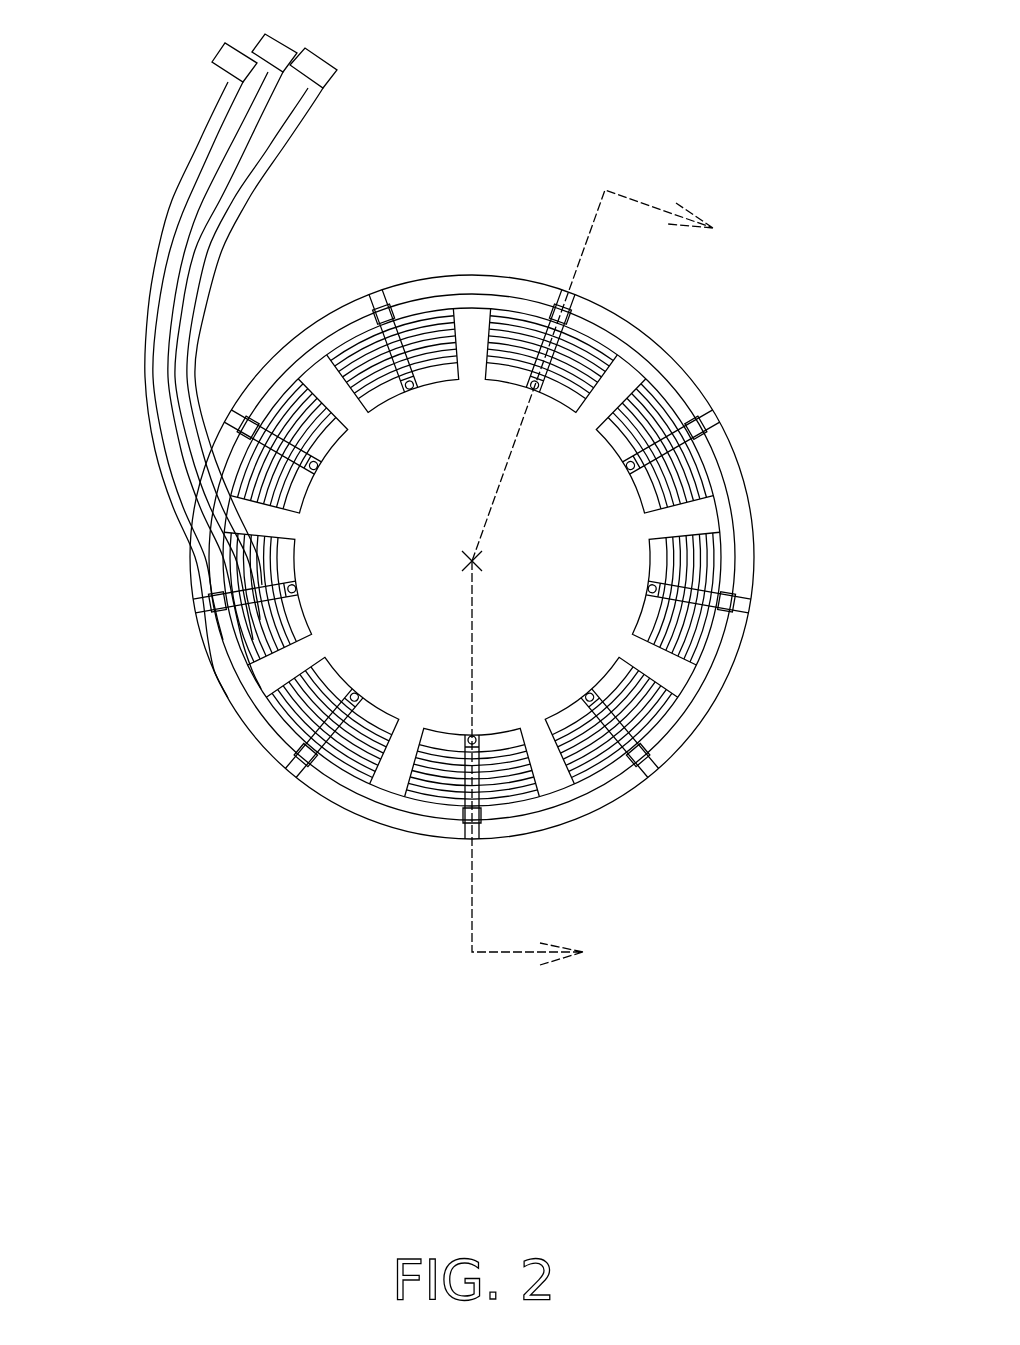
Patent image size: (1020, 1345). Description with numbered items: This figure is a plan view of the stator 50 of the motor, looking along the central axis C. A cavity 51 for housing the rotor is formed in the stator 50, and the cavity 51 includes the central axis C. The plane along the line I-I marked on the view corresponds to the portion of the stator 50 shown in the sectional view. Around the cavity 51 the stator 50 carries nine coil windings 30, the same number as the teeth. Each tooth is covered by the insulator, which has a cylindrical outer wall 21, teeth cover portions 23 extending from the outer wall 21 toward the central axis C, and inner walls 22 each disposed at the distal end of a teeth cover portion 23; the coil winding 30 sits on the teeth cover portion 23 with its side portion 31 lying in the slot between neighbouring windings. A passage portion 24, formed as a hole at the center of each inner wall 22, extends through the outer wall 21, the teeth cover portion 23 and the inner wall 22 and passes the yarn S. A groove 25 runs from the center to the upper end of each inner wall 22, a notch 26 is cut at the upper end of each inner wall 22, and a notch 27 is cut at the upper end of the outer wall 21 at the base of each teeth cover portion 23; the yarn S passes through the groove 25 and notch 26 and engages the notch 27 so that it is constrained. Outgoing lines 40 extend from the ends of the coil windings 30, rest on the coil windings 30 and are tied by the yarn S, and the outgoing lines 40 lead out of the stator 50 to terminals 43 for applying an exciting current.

The outer wall 21 is at (723, 460).
The inner wall 22 is at (648, 487).
The teeth cover portion 23 is at (645, 402).
The passage portion 24 is at (597, 747).
The groove 25 is at (410, 387).
The notch 26 is at (394, 388).
The notch 27 is at (392, 298).
The coil winding 30 is at (595, 700).
The coil side portion 31 is at (321, 656).
The outgoing line 40 is at (312, 365).
The terminal 43 is at (312, 70).
The stator 50 is at (517, 466).
The cavity 51 is at (550, 641).
The central axis C is at (459, 539).
The yarn S is at (735, 585).
The line I- I is at (609, 577).